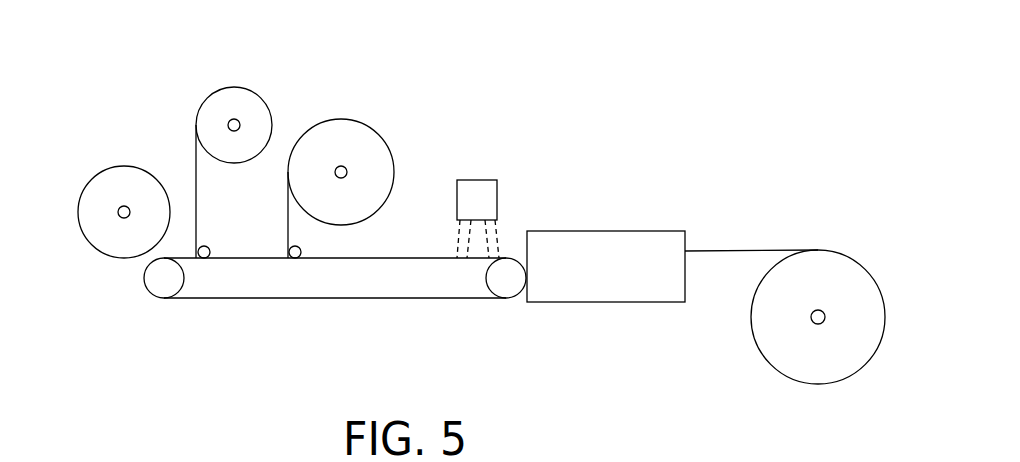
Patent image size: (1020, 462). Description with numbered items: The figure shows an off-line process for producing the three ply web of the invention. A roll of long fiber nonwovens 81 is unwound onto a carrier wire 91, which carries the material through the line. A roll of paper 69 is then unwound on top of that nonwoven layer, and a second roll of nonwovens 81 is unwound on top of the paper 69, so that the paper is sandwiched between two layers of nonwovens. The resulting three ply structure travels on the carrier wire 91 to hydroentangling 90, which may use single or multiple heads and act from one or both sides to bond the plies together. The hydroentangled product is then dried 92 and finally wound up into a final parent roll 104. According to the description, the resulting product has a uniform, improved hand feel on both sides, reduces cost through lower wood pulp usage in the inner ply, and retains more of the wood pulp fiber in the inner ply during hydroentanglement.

The roll of paper 69 is at (260, 100).
The roll of long fiber nonwovens 81 is at (128, 177).
The hydroentangling 90 is at (479, 180).
The carrier wire 91 is at (367, 292).
The dryer 92 is at (612, 238).
The final parent roll 104 is at (758, 346).